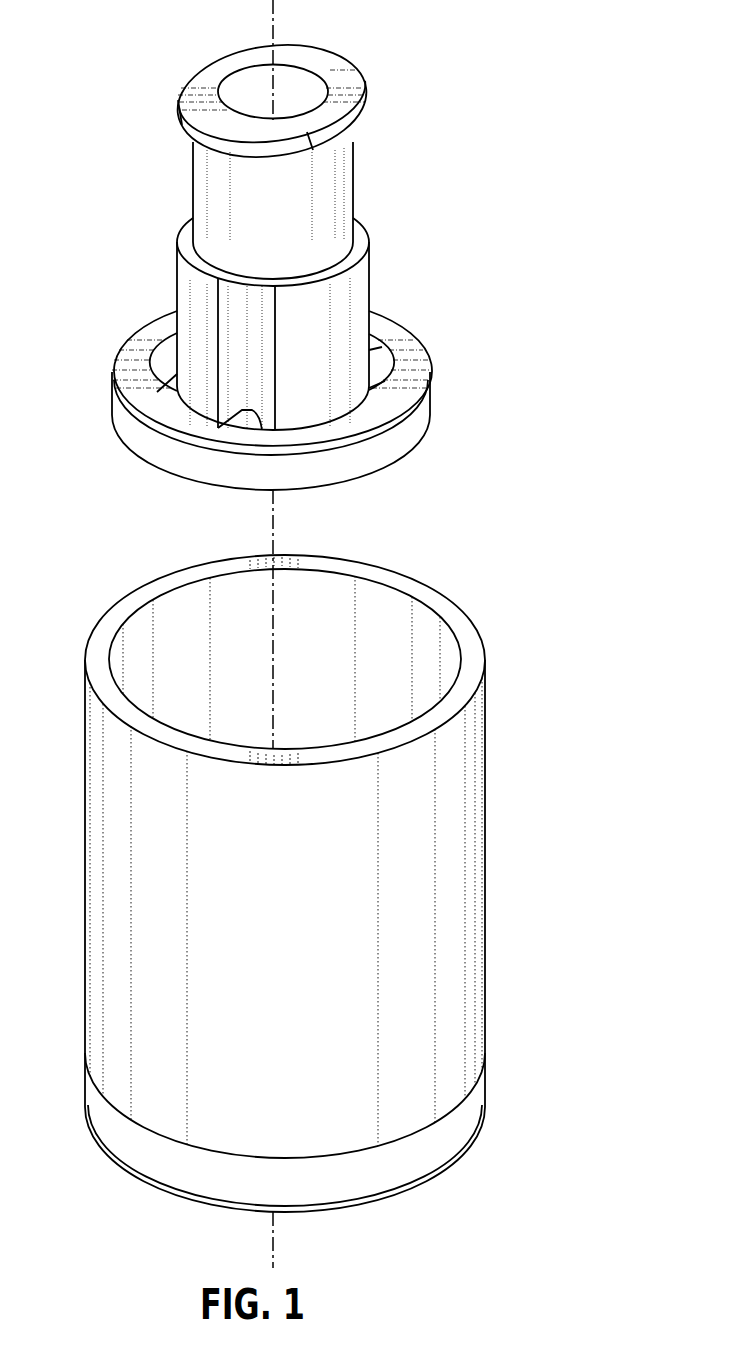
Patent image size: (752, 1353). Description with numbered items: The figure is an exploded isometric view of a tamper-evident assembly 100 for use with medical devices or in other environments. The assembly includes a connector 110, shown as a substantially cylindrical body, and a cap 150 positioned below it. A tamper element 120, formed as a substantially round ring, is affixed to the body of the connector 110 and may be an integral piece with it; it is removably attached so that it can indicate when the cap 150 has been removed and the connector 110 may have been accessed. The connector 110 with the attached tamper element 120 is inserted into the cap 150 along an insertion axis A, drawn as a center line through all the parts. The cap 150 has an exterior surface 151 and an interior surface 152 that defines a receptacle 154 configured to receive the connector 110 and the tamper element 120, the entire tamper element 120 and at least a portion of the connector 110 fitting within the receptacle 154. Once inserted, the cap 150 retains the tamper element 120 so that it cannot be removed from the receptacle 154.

The tamper-evident assembly 100 is at (334, 634).
The insertion axis A is at (277, 3).
The connector 110 is at (436, 242).
The tamper element 120 is at (441, 402).
The cap 150 is at (322, 869).
The exterior surface 151 is at (428, 1007).
The interior surface 152 is at (137, 644).
The receptacle 154 is at (289, 633).